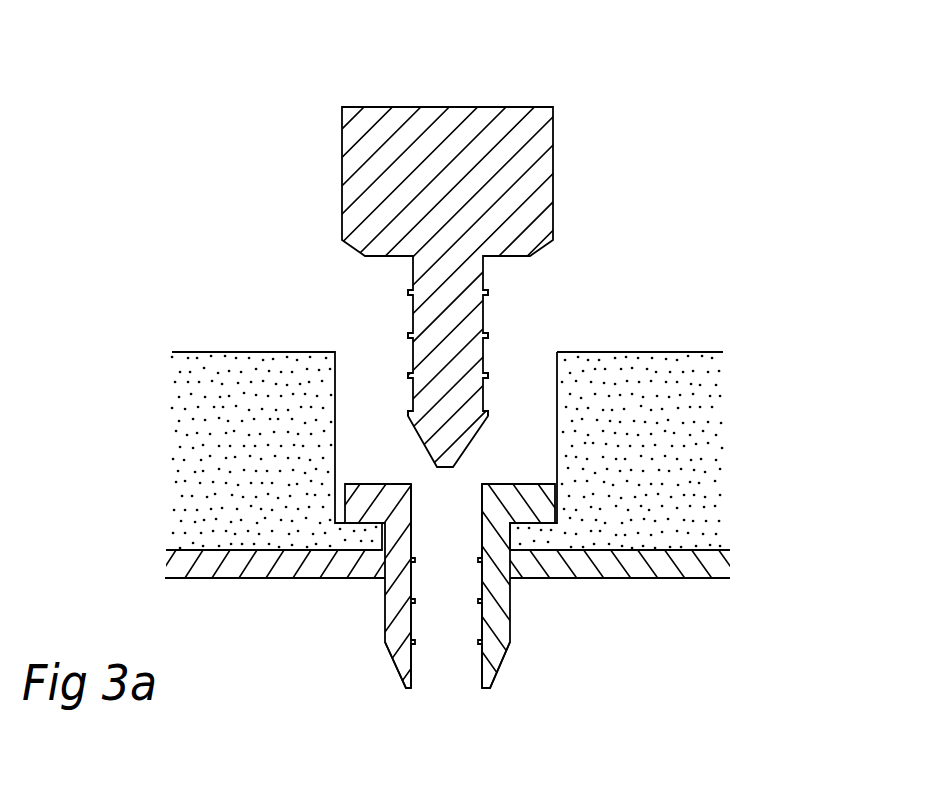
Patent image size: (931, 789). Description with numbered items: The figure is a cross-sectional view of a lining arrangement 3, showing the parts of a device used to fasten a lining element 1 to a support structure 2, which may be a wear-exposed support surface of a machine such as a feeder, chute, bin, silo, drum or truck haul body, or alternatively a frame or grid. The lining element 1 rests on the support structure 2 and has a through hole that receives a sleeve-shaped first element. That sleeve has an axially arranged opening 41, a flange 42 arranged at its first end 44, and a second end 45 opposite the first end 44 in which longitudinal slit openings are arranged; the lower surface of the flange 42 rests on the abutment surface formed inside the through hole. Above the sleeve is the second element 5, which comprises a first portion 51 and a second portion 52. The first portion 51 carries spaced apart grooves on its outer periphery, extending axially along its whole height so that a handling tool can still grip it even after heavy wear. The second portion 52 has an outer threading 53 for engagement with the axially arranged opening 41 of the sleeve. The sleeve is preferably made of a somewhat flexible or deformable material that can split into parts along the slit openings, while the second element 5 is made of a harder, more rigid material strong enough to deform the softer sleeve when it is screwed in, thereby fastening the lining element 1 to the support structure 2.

The lining element 1 is at (208, 470).
The support structure 2 is at (208, 566).
The lining arrangement 3 is at (746, 192).
The second element 5 is at (506, 85).
The axially arranged opening 41 is at (441, 630).
The flange 42 is at (533, 507).
The first end 44 is at (375, 483).
The second end 45 is at (488, 685).
The first portion 51 is at (370, 170).
The second portion 52 is at (462, 327).
The outer threading 53 is at (412, 293).